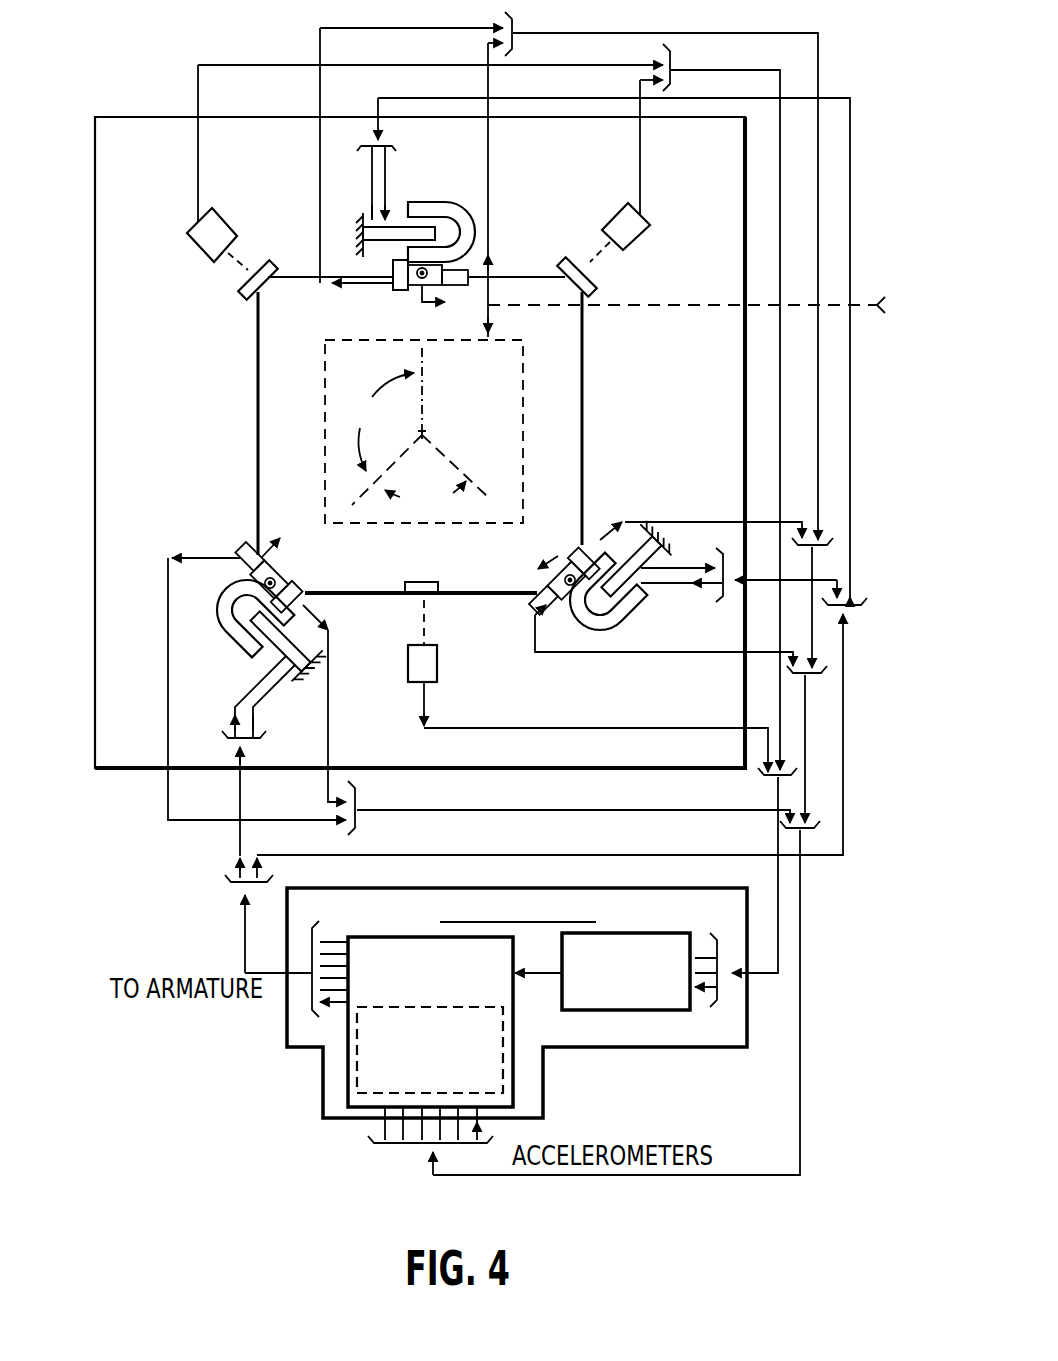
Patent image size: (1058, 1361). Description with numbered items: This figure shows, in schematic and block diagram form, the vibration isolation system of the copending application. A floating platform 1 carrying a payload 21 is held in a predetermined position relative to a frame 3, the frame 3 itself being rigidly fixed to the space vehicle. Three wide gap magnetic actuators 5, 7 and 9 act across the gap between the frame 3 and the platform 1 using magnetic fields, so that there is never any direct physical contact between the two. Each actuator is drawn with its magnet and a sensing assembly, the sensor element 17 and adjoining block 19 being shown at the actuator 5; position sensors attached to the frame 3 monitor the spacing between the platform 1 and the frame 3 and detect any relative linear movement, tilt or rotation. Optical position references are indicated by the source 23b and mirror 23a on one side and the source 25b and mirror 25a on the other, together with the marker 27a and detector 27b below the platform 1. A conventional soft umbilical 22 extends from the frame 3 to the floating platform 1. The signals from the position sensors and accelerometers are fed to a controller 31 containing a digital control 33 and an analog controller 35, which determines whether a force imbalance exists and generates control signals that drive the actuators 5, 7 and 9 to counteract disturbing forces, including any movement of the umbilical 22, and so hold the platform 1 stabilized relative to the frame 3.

The floating platform 1 is at (301, 385).
The frame 3 is at (559, 172).
The wide gap magnetic actuator 5 is at (424, 196).
The wide gap magnetic actuator 7 is at (642, 624).
The wide gap magnetic actuator 9 is at (228, 650).
The position sensor 17 is at (447, 289).
The sensor block 19 is at (400, 291).
The payload 21 is at (525, 402).
The soft umbilical 22 is at (633, 306).
The first mirror 23a is at (244, 292).
The first light source 23b is at (223, 214).
The second mirror 25a is at (594, 280).
The second light source 25b is at (612, 222).
The target marker 27a is at (426, 582).
The detector 27b is at (437, 660).
The controller 31 is at (673, 1047).
The digital control 33 is at (690, 1010).
The analog controller 35 is at (515, 1047).